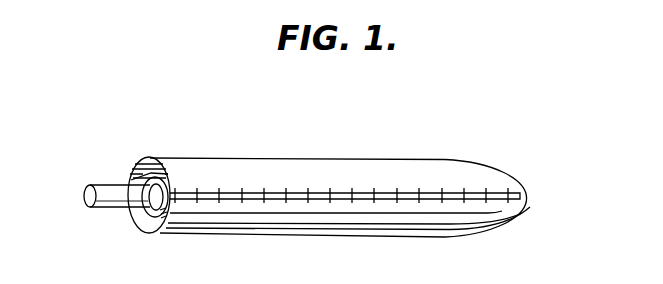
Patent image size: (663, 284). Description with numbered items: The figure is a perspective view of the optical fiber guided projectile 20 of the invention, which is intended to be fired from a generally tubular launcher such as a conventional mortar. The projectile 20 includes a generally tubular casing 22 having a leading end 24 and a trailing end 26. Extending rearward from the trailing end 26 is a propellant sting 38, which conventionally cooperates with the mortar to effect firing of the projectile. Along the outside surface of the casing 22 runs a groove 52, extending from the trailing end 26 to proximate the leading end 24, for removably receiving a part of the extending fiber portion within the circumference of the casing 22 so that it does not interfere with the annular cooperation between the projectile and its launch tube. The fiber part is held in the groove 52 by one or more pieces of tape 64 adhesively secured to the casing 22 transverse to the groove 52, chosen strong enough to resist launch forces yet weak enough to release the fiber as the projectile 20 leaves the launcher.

The projectile 20 is at (384, 121).
The casing 22 is at (219, 157).
The leading end 24 is at (532, 184).
The trailing end 26 is at (157, 157).
The propellant sting 38 is at (93, 180).
The groove 52 is at (279, 189).
The tape 64 is at (442, 187).